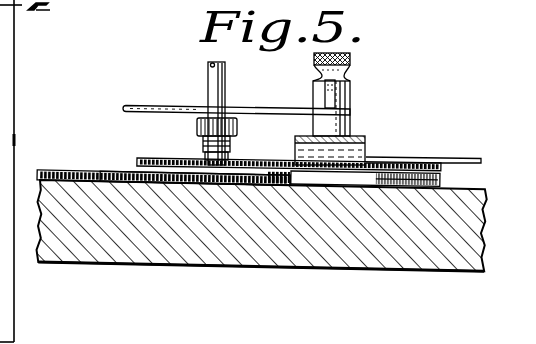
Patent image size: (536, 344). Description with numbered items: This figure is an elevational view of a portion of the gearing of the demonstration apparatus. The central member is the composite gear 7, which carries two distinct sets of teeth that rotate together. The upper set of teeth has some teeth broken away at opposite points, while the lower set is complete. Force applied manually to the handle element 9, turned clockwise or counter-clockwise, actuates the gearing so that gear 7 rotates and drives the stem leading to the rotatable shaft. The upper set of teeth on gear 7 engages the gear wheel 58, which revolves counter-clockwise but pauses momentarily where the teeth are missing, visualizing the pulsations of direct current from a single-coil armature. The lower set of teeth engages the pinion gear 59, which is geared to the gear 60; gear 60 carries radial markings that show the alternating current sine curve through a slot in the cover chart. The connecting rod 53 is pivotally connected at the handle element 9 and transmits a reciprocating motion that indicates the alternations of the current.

The gear 7 is at (153, 157).
The handle element 9 is at (237, 128).
The connecting rod 53 is at (460, 149).
The gear wheel 58 is at (441, 177).
The pinion gear 59 is at (120, 153).
The gear 60 is at (73, 153).